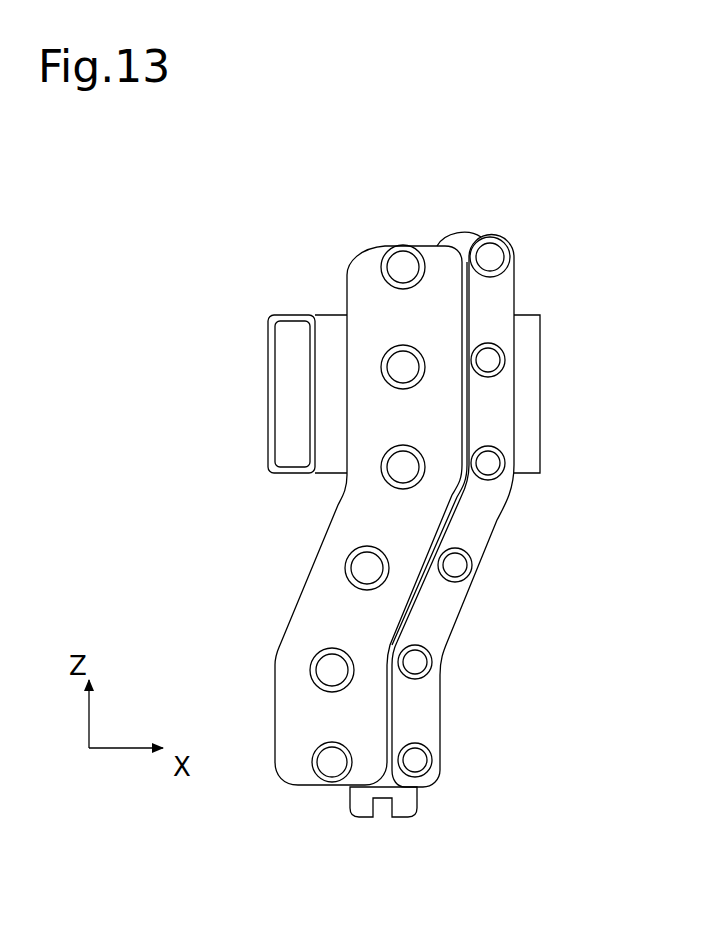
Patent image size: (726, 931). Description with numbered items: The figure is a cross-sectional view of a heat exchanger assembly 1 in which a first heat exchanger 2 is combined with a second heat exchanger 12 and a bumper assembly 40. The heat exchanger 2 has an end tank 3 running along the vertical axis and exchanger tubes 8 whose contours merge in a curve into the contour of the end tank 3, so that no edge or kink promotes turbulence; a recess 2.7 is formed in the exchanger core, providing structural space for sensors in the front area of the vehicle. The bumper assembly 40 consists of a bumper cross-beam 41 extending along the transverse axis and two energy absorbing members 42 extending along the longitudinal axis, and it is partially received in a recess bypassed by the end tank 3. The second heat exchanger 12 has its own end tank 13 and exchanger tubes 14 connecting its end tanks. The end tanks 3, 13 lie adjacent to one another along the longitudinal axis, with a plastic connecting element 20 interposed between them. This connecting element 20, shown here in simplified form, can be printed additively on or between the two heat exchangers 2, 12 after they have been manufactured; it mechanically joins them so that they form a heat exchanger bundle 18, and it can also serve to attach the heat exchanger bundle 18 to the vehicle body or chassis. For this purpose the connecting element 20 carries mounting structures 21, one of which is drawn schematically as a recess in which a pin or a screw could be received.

The heat exchanger assembly 1 is at (673, 200).
The heat exchanger 2 is at (367, 243).
The end tank 3 is at (298, 598).
The recess 2.7 is at (300, 508).
The exchanger tubes 8 is at (404, 246).
The connecting element 20 is at (460, 230).
The second heat exchanger 12 is at (500, 226).
The end tank 13 is at (493, 537).
The exchanger tubes 14 is at (458, 581).
The heat exchanger bundle 18 is at (538, 497).
The bumper assembly 40 is at (272, 298).
The bumper cross-beam 41 is at (268, 395).
The energy absorbing members 42 is at (530, 313).
The mounting structures 21 is at (387, 820).